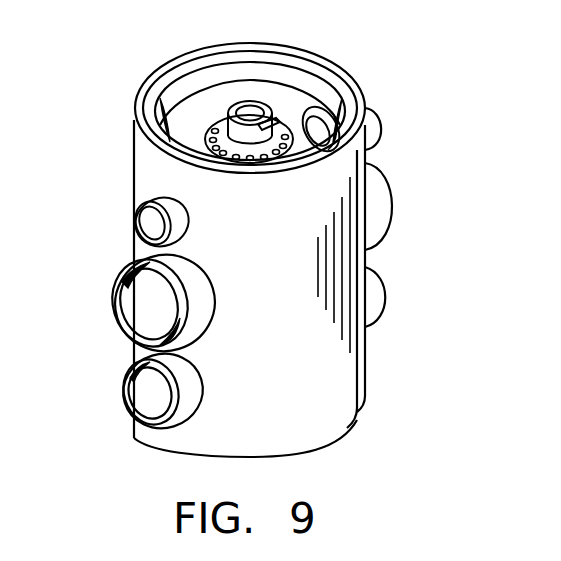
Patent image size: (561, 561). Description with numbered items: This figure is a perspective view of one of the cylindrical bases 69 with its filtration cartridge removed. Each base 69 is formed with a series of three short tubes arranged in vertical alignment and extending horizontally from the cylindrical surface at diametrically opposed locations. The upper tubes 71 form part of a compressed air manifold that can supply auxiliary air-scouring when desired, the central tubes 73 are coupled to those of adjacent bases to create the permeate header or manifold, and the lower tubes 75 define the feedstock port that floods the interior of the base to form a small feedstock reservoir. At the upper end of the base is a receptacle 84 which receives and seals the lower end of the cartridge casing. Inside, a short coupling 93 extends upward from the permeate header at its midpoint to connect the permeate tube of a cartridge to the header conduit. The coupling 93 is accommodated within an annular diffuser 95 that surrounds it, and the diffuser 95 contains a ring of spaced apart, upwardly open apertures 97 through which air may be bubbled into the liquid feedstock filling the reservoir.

The base 69 is at (307, 372).
The upper tube 71 is at (140, 180).
The central tube 73 is at (127, 260).
The lower tube 75 is at (122, 362).
The receptacle 84 is at (293, 62).
The coupling 93 is at (246, 136).
The diffuser 95 is at (328, 106).
The apertures 97 is at (213, 128).